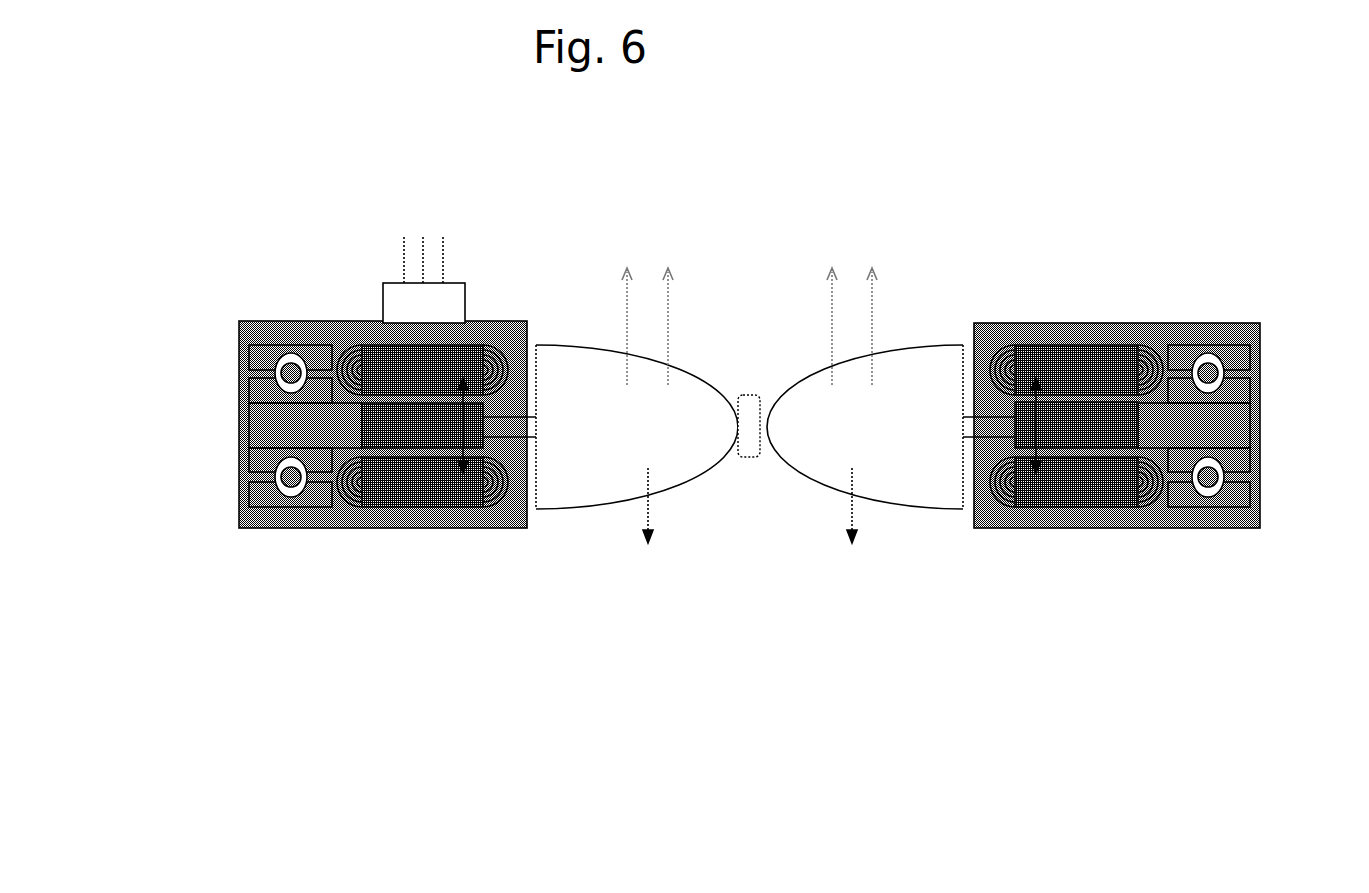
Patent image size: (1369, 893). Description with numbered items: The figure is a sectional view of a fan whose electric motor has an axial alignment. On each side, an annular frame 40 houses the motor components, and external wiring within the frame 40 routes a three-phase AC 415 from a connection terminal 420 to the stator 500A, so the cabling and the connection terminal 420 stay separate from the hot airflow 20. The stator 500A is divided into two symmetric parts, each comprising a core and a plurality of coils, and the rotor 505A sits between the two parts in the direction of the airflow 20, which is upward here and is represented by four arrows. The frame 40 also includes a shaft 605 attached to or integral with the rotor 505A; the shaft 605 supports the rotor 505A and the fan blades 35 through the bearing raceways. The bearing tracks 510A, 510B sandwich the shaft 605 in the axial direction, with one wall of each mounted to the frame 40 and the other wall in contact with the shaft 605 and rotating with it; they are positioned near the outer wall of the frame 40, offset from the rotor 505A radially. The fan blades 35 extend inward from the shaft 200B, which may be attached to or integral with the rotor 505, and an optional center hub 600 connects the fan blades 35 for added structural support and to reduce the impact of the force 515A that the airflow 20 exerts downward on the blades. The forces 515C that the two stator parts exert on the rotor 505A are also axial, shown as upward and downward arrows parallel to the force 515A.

The frame 40 is at (706, 424).
The connection terminal 420 is at (403, 293).
The three-phase AC 415 is at (424, 236).
The bearing track 510A is at (293, 348).
The bearing track 510B is at (280, 500).
The shaft 605 is at (749, 425).
The stator 500A is at (422, 426).
The rotor 505A is at (1076, 427).
The rotor 505 is at (750, 427).
The shaft 200B is at (1010, 417).
The fan blades 35 is at (749, 427).
The center hub 600 is at (748, 376).
The airflow 20 is at (797, 326).
The force 515A is at (750, 517).
The forces 515C is at (463, 470).